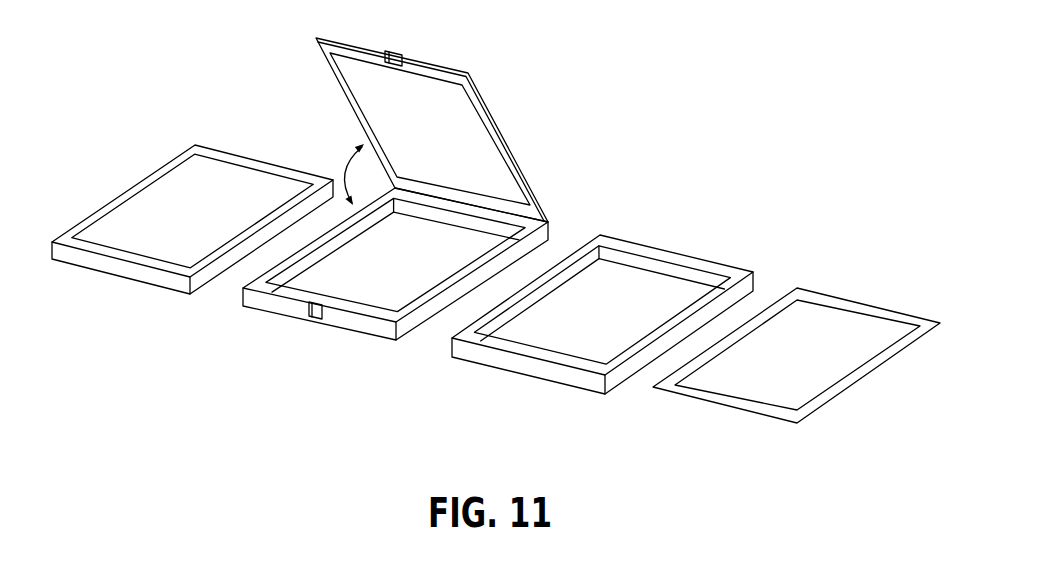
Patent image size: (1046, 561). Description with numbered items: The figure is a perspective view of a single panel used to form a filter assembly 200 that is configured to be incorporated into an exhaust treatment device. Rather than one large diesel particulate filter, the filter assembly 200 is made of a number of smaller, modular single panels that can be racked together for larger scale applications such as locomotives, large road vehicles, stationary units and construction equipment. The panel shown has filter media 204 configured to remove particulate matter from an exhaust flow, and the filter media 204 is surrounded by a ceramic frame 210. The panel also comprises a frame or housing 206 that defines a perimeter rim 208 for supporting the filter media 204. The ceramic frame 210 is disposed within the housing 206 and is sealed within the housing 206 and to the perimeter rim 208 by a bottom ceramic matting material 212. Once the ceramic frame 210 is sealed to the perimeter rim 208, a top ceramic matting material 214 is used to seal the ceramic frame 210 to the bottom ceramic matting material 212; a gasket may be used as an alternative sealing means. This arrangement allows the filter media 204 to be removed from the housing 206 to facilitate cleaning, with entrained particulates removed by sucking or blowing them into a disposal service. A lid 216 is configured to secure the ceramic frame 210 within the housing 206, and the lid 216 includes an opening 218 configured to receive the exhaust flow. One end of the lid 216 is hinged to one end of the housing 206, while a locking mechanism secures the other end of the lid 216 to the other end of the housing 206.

The filter assembly 200 is at (208, 70).
The filter media 204 is at (178, 183).
The housing 206 is at (348, 323).
The perimeter rim 208 is at (320, 263).
The ceramic frame 210 is at (117, 195).
The bottom ceramic matting material 212 is at (540, 232).
The top ceramic matting material 214 is at (720, 403).
The lid 216 is at (506, 140).
The opening 218 is at (363, 88).